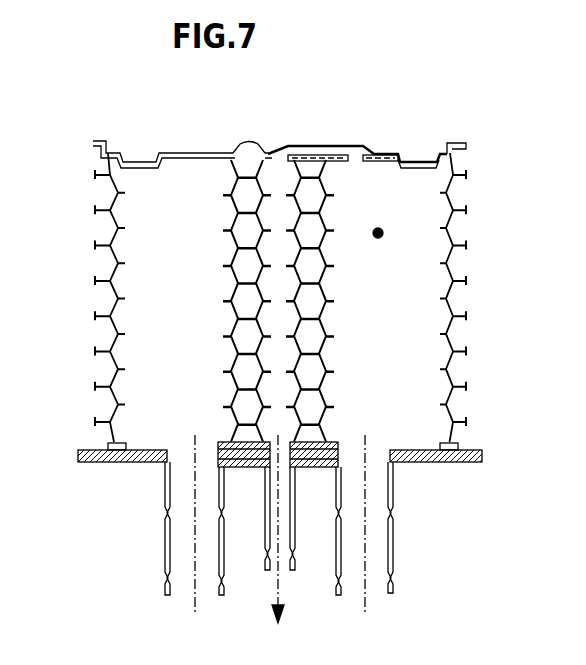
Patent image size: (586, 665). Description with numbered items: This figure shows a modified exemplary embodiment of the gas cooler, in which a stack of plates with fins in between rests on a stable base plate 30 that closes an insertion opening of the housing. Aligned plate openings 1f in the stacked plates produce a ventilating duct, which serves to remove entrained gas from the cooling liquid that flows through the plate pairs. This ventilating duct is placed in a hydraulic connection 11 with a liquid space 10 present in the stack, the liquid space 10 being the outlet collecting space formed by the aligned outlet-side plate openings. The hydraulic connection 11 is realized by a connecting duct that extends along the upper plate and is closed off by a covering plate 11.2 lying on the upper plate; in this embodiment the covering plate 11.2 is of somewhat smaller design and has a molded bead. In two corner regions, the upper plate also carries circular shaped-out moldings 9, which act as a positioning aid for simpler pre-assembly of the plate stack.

The hydraulic connection 11 is at (303, 160).
The covering plate 11.2 is at (345, 165).
The liquid space 10 is at (379, 228).
The shaped-out moldings 9 is at (418, 158).
The base plate 30 is at (135, 463).
The plate openings 1f is at (292, 372).